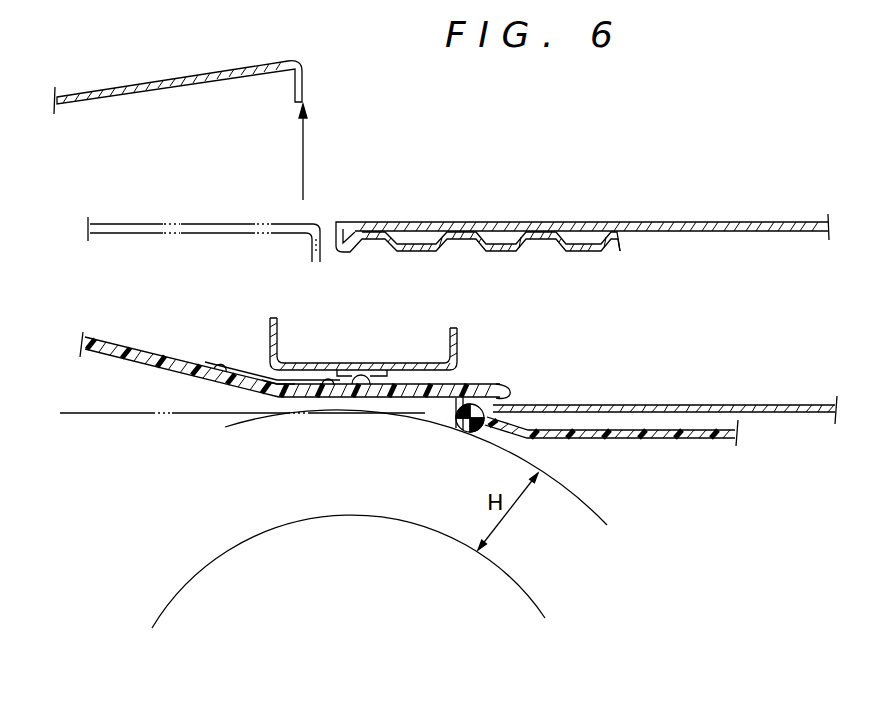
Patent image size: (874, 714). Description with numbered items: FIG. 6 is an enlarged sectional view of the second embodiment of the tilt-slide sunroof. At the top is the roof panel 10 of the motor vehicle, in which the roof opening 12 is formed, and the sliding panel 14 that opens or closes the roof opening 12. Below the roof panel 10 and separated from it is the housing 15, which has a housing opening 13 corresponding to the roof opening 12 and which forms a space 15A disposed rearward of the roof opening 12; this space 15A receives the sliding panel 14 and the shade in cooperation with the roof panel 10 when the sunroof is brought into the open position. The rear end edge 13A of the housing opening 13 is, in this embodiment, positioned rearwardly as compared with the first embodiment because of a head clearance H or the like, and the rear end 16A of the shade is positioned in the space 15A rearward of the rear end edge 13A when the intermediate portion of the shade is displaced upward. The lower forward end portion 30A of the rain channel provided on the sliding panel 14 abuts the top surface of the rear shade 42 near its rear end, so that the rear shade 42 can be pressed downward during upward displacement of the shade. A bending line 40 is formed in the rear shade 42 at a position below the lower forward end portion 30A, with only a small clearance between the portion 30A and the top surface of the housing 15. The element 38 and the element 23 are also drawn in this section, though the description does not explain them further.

The roof panel 10 is at (486, 222).
The roof opening 12 is at (283, 252).
The housing opening 13 is at (118, 415).
The rear end edge of the housing opening 13A is at (463, 386).
The sliding panel 14 is at (201, 77).
The housing 15 is at (788, 414).
The space 15A is at (698, 313).
The rear end of the shade 16A is at (505, 393).
The reinforcement strip 23 is at (645, 438).
The lower forward end portion of the rain channel 30A is at (274, 368).
The bracket plate 38 is at (250, 370).
The bending line 40 is at (282, 398).
The rear shade 42 is at (148, 368).